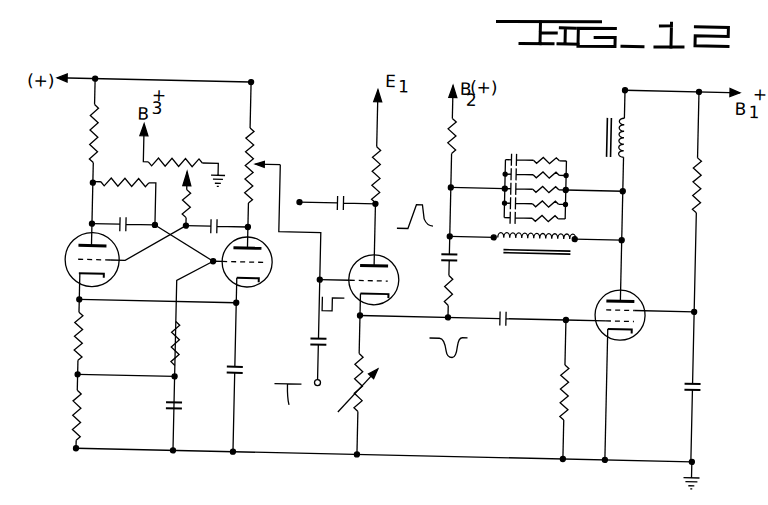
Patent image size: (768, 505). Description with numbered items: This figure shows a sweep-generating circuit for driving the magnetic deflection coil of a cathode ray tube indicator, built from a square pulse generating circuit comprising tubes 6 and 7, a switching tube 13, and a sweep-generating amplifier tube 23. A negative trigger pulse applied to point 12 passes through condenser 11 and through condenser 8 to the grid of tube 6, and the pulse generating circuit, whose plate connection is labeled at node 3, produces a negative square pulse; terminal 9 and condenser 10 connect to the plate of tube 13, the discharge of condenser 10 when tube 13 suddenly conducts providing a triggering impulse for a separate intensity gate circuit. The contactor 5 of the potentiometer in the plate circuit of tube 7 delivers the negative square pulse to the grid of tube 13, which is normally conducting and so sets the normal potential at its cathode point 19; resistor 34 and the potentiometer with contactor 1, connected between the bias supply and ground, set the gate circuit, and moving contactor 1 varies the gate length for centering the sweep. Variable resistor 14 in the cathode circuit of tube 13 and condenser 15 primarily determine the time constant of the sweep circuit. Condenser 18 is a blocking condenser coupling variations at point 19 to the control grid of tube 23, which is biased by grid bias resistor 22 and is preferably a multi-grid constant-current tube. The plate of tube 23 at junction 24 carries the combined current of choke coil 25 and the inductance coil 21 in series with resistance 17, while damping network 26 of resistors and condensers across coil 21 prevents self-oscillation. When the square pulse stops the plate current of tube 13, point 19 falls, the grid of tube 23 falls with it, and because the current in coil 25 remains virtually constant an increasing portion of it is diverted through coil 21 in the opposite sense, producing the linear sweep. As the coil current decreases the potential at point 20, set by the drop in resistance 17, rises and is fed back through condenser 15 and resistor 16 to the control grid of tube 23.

The contactor 1 is at (182, 181).
The multivibrator 3 is at (87, 232).
The contactor 5 is at (256, 163).
The tube 6 is at (66, 269).
The tube 7 is at (281, 265).
The condenser 8 is at (216, 232).
The terminal 9 is at (296, 205).
The condenser 10 is at (350, 191).
The condenser 11 is at (313, 346).
The point 12 is at (324, 387).
The switching tube 13 is at (402, 283).
The variable resistor 14 is at (366, 411).
The condenser 15 is at (453, 260).
The resistor 16 is at (455, 303).
The resistance 17 is at (455, 146).
The condenser 18 is at (503, 323).
The point 19 is at (364, 321).
The point 20 is at (431, 233).
The inductance coil 21 is at (548, 249).
The grid bias resistor 22 is at (563, 415).
The amplifier tube 23 is at (643, 281).
The point 24 is at (627, 233).
The inductance coil 25 is at (623, 152).
The damping network 26 is at (570, 157).
The resistor 34 is at (189, 224).